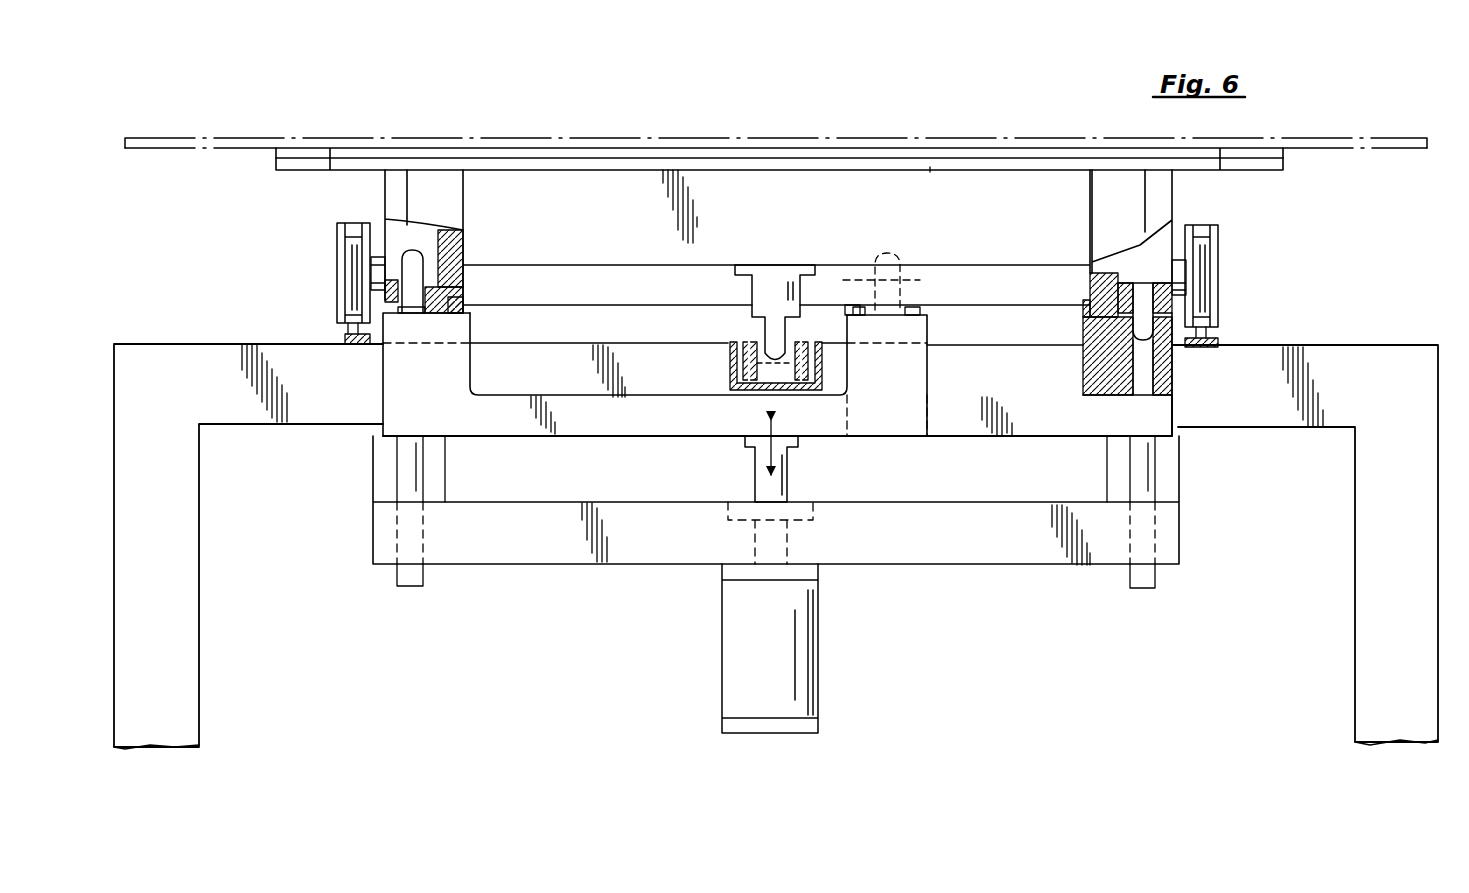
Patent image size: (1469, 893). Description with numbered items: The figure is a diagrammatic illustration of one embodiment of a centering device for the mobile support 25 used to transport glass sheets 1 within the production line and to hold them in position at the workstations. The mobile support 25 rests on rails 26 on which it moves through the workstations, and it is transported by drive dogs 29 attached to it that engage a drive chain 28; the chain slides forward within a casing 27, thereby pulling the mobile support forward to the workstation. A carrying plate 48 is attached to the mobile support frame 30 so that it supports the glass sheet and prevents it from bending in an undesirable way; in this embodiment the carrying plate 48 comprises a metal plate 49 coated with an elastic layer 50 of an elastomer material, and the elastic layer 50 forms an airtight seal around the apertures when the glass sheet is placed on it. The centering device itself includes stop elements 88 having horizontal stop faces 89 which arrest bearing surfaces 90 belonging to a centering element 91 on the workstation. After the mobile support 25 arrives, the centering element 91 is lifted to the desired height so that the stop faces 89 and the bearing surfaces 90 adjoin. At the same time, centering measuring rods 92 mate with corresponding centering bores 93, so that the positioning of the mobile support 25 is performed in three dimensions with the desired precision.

The glass pane 1 is at (812, 135).
The mobile support 25 is at (1180, 195).
The rail 26 is at (340, 340).
The casing 27 is at (732, 366).
The drive chain 28 is at (785, 392).
The drive dog 29 is at (770, 331).
The mobile support frame 30 is at (385, 200).
The carrying plate 48 is at (943, 138).
The metal plate 49 is at (901, 170).
The elastic layer 50 is at (1006, 155).
The stop element 88 is at (455, 312).
The horizontal stop face 89 is at (452, 318).
The bearing surface 90 is at (450, 306).
The centering element 91 is at (653, 442).
The centering measuring rod 92 is at (412, 258).
The centering bore 93 is at (455, 250).